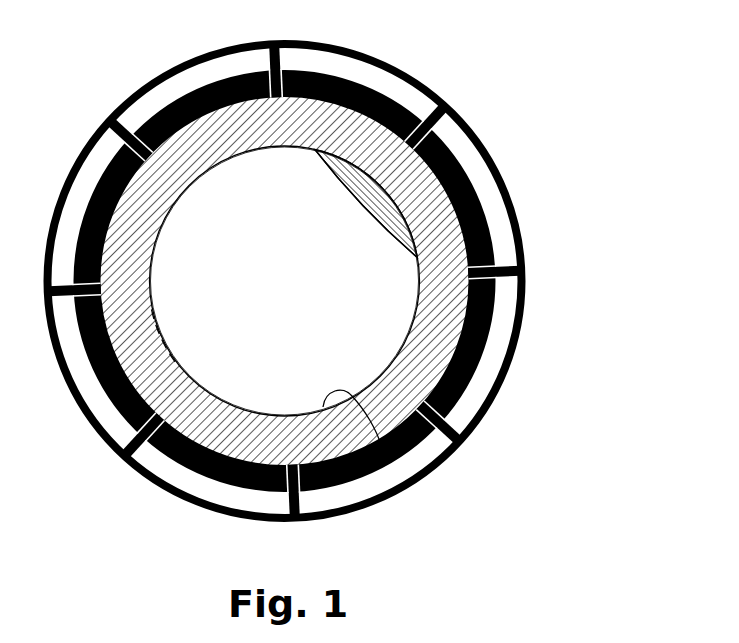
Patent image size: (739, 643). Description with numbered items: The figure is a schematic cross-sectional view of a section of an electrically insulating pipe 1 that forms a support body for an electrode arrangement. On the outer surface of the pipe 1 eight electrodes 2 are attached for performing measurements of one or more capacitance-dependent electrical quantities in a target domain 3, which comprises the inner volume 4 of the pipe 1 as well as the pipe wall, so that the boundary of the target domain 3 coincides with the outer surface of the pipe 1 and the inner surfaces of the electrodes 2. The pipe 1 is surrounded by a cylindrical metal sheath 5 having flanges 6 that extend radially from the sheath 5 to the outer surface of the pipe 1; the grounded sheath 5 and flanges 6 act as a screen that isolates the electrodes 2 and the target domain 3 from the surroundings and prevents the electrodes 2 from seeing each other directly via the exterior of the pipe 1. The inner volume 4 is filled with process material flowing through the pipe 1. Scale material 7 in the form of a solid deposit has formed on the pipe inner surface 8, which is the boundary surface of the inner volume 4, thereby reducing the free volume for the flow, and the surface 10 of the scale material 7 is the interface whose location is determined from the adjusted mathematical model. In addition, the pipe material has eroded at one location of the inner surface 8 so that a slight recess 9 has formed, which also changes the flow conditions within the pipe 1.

The electrically insulating pipe 1 is at (240, 153).
The electrodes 2 is at (473, 188).
The target domain 3 is at (474, 281).
The inner volume 4 is at (299, 306).
The cylindrical metal sheath 5 is at (515, 372).
The flanges 6 is at (445, 442).
The scale material 7 is at (358, 188).
The pipe inner surface 8 is at (395, 465).
The recess 9 is at (163, 347).
The surface of scale material 10 is at (392, 236).